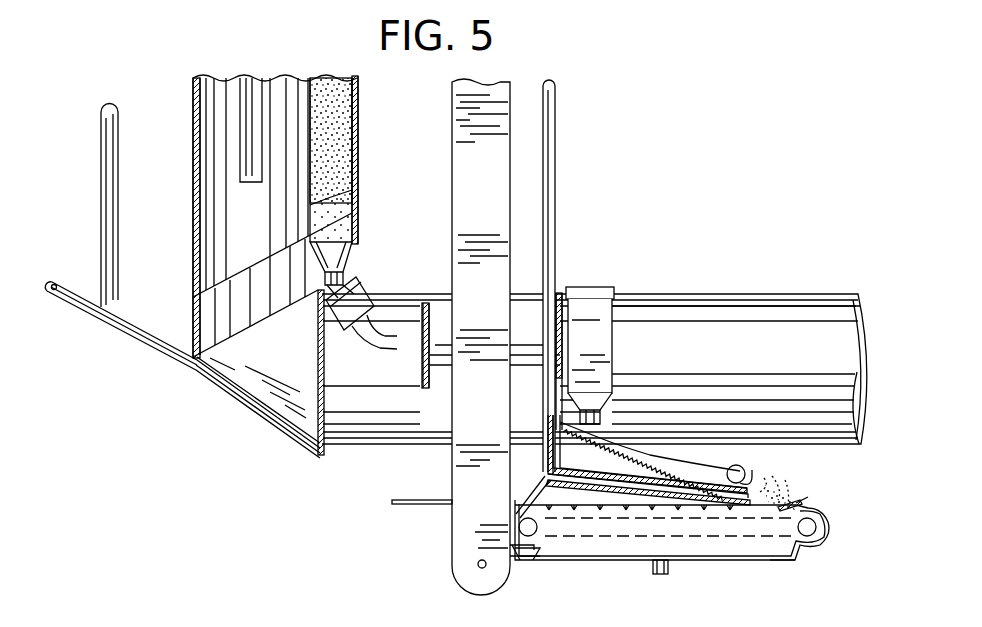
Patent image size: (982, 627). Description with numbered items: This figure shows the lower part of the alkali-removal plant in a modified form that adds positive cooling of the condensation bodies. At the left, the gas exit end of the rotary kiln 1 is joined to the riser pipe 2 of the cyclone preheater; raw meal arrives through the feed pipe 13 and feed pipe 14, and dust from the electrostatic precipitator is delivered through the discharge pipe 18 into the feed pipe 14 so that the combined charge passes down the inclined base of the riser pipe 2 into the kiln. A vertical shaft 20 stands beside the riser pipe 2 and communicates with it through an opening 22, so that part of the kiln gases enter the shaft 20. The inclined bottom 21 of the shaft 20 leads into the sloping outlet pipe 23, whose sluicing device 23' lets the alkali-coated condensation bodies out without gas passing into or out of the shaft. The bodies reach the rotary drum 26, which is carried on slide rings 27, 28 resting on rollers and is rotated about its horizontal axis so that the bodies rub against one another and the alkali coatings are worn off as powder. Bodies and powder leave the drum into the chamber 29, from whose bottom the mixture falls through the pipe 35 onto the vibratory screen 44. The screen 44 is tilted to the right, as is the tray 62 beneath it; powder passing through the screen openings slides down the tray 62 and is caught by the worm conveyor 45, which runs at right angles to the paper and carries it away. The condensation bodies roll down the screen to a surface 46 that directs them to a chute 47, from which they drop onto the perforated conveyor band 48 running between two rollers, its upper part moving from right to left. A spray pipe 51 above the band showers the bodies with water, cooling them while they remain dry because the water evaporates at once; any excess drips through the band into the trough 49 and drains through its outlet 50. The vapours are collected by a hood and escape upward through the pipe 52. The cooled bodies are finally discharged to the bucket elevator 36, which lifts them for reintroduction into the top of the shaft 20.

The gas exit end of rotary kiln 1 is at (800, 314).
The riser pipe 2 is at (256, 216).
The feed pipe 13 is at (252, 183).
The feed pipe 14 is at (75, 300).
The discharge pipe 18 is at (100, 207).
The shaft 20 is at (358, 92).
The bottom of the shaft 21 is at (345, 250).
The opening 22 is at (350, 196).
The sloping outlet pipe 23 is at (365, 267).
The sluicing device 23' is at (367, 308).
The rotary drum 26 is at (548, 305).
The slide ring 27 is at (425, 390).
The slide ring 28 is at (570, 310).
The chamber 29 is at (605, 344).
The pipe 35 is at (603, 420).
The bucket elevator 36 is at (452, 142).
The vibratory screen 44 is at (575, 442).
The worm conveyor 45 is at (745, 478).
The surface 46 is at (780, 480).
The chute 47 is at (796, 505).
The perforated conveyor band 48 is at (602, 560).
The trough 49 is at (770, 562).
The outlet 50 is at (660, 575).
The spray pipe 51 is at (412, 504).
The pipe 52 is at (557, 172).
The tray 62 is at (645, 478).